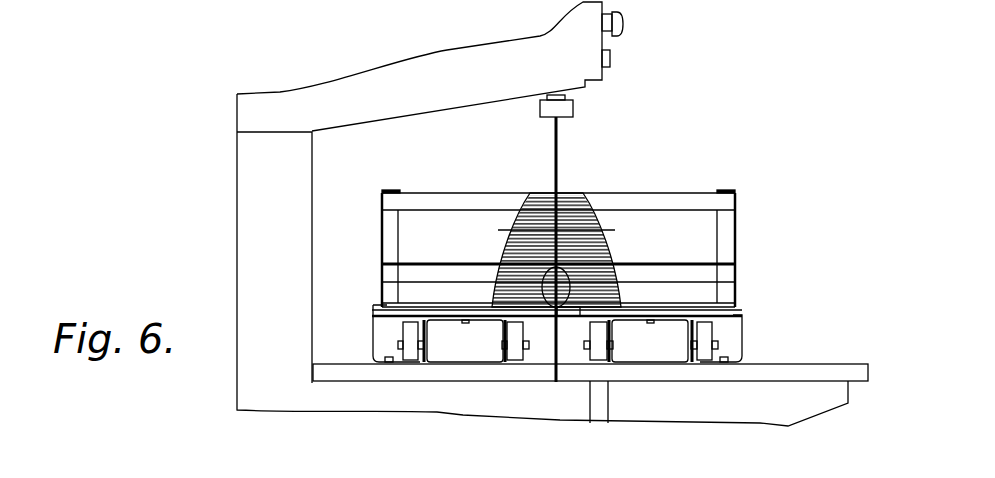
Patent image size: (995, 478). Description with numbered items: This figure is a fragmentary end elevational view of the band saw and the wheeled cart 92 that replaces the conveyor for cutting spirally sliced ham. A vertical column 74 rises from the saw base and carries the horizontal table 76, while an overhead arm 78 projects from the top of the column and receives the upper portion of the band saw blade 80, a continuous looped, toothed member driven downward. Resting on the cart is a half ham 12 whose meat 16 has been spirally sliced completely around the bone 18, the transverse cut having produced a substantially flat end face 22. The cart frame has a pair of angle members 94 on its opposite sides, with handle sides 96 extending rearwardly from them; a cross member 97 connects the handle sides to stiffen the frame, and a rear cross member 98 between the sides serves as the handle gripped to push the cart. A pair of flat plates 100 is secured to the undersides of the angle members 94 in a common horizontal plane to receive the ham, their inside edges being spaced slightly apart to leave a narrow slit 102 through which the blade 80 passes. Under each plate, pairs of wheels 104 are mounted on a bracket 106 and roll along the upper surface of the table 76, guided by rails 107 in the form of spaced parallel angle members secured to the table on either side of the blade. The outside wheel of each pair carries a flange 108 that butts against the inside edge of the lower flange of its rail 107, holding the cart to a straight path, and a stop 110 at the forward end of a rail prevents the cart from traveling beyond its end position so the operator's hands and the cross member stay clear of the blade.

The half ham 12 is at (520, 230).
The meat 16 is at (585, 192).
The bone 18 is at (530, 193).
The end face 22 is at (580, 308).
The vertical column 74 is at (253, 210).
The horizontal table 76 is at (825, 370).
The overhead arm 78 is at (447, 62).
The band saw blade 80 is at (558, 146).
The wheeled cart 92 is at (582, 221).
The angle members 94 is at (382, 292).
The handle sides 96 is at (382, 229).
The cross member 97 is at (695, 272).
The rear cross member 98 is at (668, 200).
The flat plates 100 is at (400, 300).
The slit 102 is at (553, 310).
The wheels 104 is at (410, 357).
The bracket 106 is at (490, 324).
The rails 107 is at (372, 340).
The flange 108 is at (428, 366).
The stop 110 is at (373, 305).